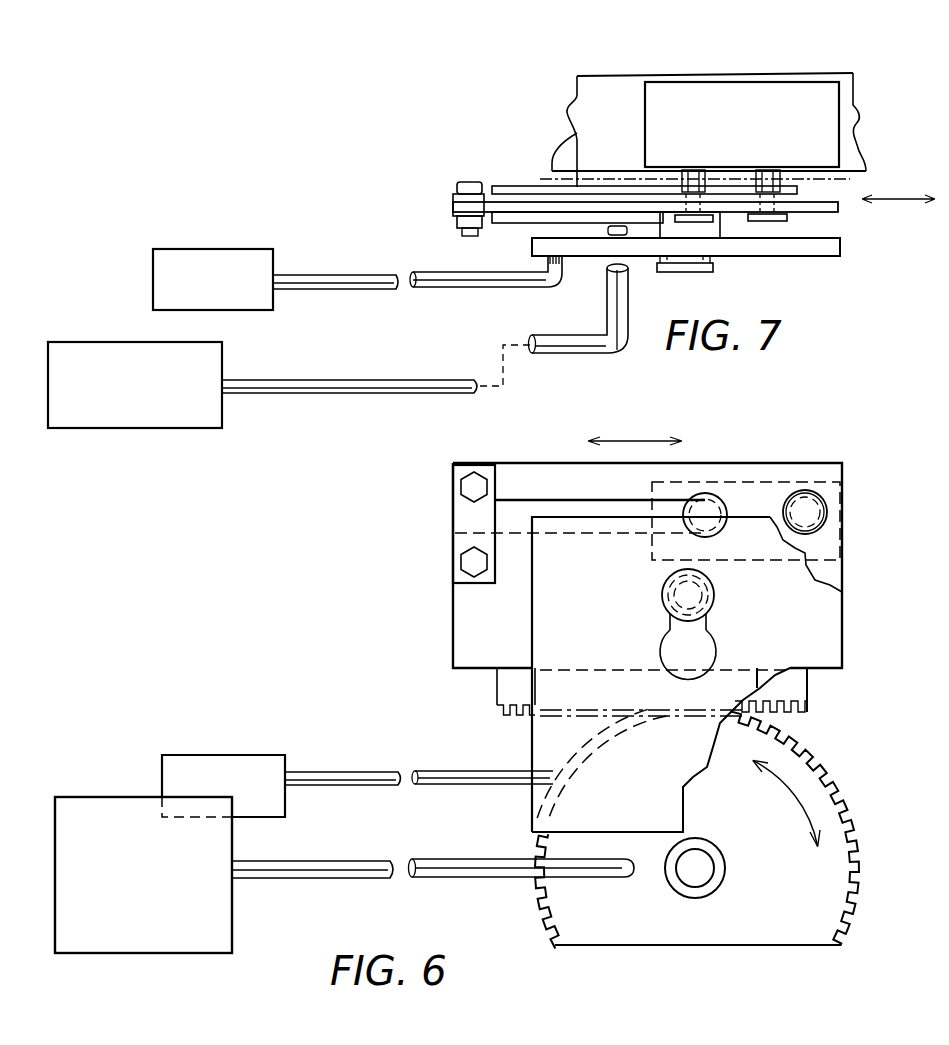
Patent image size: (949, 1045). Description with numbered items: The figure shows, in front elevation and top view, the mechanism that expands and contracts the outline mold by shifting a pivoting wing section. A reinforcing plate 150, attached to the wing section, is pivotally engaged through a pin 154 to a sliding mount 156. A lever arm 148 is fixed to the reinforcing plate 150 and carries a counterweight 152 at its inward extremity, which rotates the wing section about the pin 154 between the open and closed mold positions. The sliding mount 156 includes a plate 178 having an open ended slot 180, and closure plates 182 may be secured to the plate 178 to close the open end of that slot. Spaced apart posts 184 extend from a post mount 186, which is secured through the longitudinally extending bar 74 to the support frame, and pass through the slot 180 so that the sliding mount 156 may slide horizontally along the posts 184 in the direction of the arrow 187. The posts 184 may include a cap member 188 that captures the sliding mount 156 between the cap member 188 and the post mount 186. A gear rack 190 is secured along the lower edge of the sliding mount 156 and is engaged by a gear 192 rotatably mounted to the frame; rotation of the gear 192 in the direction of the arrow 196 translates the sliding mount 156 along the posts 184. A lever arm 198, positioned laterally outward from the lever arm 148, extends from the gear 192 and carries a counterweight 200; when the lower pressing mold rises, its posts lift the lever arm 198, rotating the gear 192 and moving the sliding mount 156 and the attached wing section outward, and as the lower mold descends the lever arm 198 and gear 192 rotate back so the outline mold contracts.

In FIG. 7, the longitudinally extending bar 74 is at (623, 76).
In FIG. 7, the lever arm 148 is at (338, 275).
In FIG. 6, the lever arm 148 is at (335, 772).
In FIG. 7, the reinforcing plate 150 is at (842, 247).
In FIG. 6, the reinforcing plate 150 is at (532, 600).
In FIG. 7, the counterweight 152 is at (215, 249).
In FIG. 6, the counterweight 152 is at (218, 755).
In FIG. 7, the pin 154 is at (686, 272).
In FIG. 6, the pin 154 is at (700, 592).
In FIG. 7, the sliding mount 156 is at (545, 186).
In FIG. 6, the sliding mount 156 is at (808, 462).
In FIG. 7, the plate 178 is at (512, 223).
In FIG. 6, the plate 178 is at (453, 655).
In FIG. 7, the open ended slot 180 is at (790, 205).
In FIG. 6, the open ended slot 180 is at (517, 500).
In FIG. 7, the closure plate 182 is at (455, 232).
In FIG. 6, the closure plate 182 is at (453, 508).
In FIG. 7, the post 184 is at (762, 190).
In FIG. 6, the post 184 is at (797, 500).
In FIG. 7, the post mount 186 is at (845, 111).
In FIG. 7, the arrow 187 is at (908, 196).
In FIG. 6, the arrow 187 is at (640, 440).
In FIG. 7, the cap member 188 is at (763, 222).
In FIG. 6, the cap member 188 is at (722, 530).
In FIG. 7, the gear rack 190 is at (566, 143).
In FIG. 6, the gear rack 190 is at (812, 688).
In FIG. 6, the gear 192 is at (812, 757).
In FIG. 6, the arrow 196 is at (800, 795).
In FIG. 7, the lever arm 198 is at (268, 393).
In FIG. 6, the lever arm 198 is at (288, 878).
In FIG. 7, the counterweight 200 is at (85, 428).
In FIG. 6, the counterweight 200 is at (235, 910).